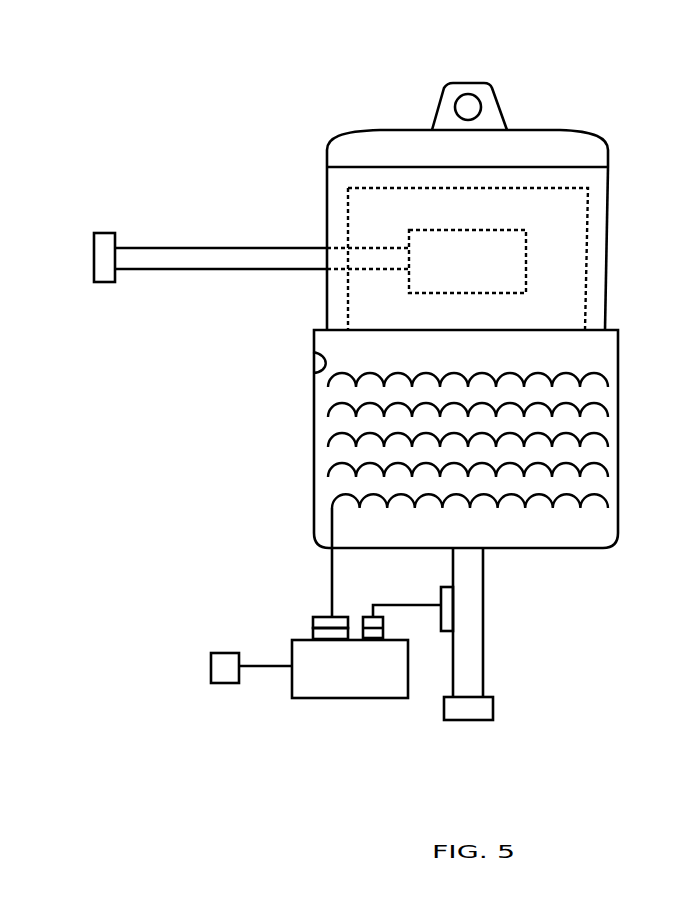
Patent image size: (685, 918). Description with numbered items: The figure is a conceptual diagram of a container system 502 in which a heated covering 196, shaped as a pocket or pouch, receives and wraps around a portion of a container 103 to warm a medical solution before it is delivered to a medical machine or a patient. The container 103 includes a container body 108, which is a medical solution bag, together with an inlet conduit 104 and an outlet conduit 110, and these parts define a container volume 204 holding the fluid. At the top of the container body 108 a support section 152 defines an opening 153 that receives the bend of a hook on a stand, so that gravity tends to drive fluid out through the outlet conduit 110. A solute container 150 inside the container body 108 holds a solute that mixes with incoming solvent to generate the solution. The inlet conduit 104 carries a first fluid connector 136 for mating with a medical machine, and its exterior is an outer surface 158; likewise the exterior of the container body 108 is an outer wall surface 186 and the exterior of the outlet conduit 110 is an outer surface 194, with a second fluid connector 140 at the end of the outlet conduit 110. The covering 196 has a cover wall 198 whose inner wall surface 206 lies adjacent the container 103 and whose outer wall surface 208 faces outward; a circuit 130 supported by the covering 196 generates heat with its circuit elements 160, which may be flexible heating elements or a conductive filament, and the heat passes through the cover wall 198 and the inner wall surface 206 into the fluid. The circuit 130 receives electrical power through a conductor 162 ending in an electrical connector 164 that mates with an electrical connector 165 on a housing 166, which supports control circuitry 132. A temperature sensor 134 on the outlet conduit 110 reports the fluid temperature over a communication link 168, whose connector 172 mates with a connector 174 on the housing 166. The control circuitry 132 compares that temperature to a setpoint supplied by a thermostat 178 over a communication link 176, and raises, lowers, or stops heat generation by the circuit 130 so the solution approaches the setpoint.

The container system 502 is at (274, 115).
The opening 153 is at (468, 105).
The support section 152 is at (497, 118).
The container body 108 is at (608, 205).
The first fluid connector 136 is at (105, 250).
The outer surface 158 is at (186, 247).
The inlet conduit 104 is at (147, 270).
The solute container 150 is at (504, 272).
The outer wall surface 186 is at (608, 270).
The container 103 is at (612, 308).
The container volume 204 is at (534, 318).
The cover wall 198 is at (343, 360).
The inner wall surface 206 is at (314, 352).
The outer wall surface 208 is at (328, 403).
The covering 196 is at (248, 425).
The circuit 130 is at (327, 428).
The circuit elements 160 is at (328, 467).
The conductor 162 is at (330, 583).
The temperature sensor 134 is at (442, 588).
The communication link 168 is at (403, 603).
The electrical connector 164 is at (312, 622).
The electrical connector 165 is at (312, 633).
The connector 172 is at (405, 612).
The connector 174 is at (402, 638).
The control circuitry 132 is at (350, 669).
The housing 166 is at (340, 698).
The communication link 176 is at (275, 667).
The thermostat 178 is at (225, 673).
The outer surface 194 is at (485, 582).
The outlet conduit 110 is at (486, 602).
The second fluid connector 140 is at (526, 710).